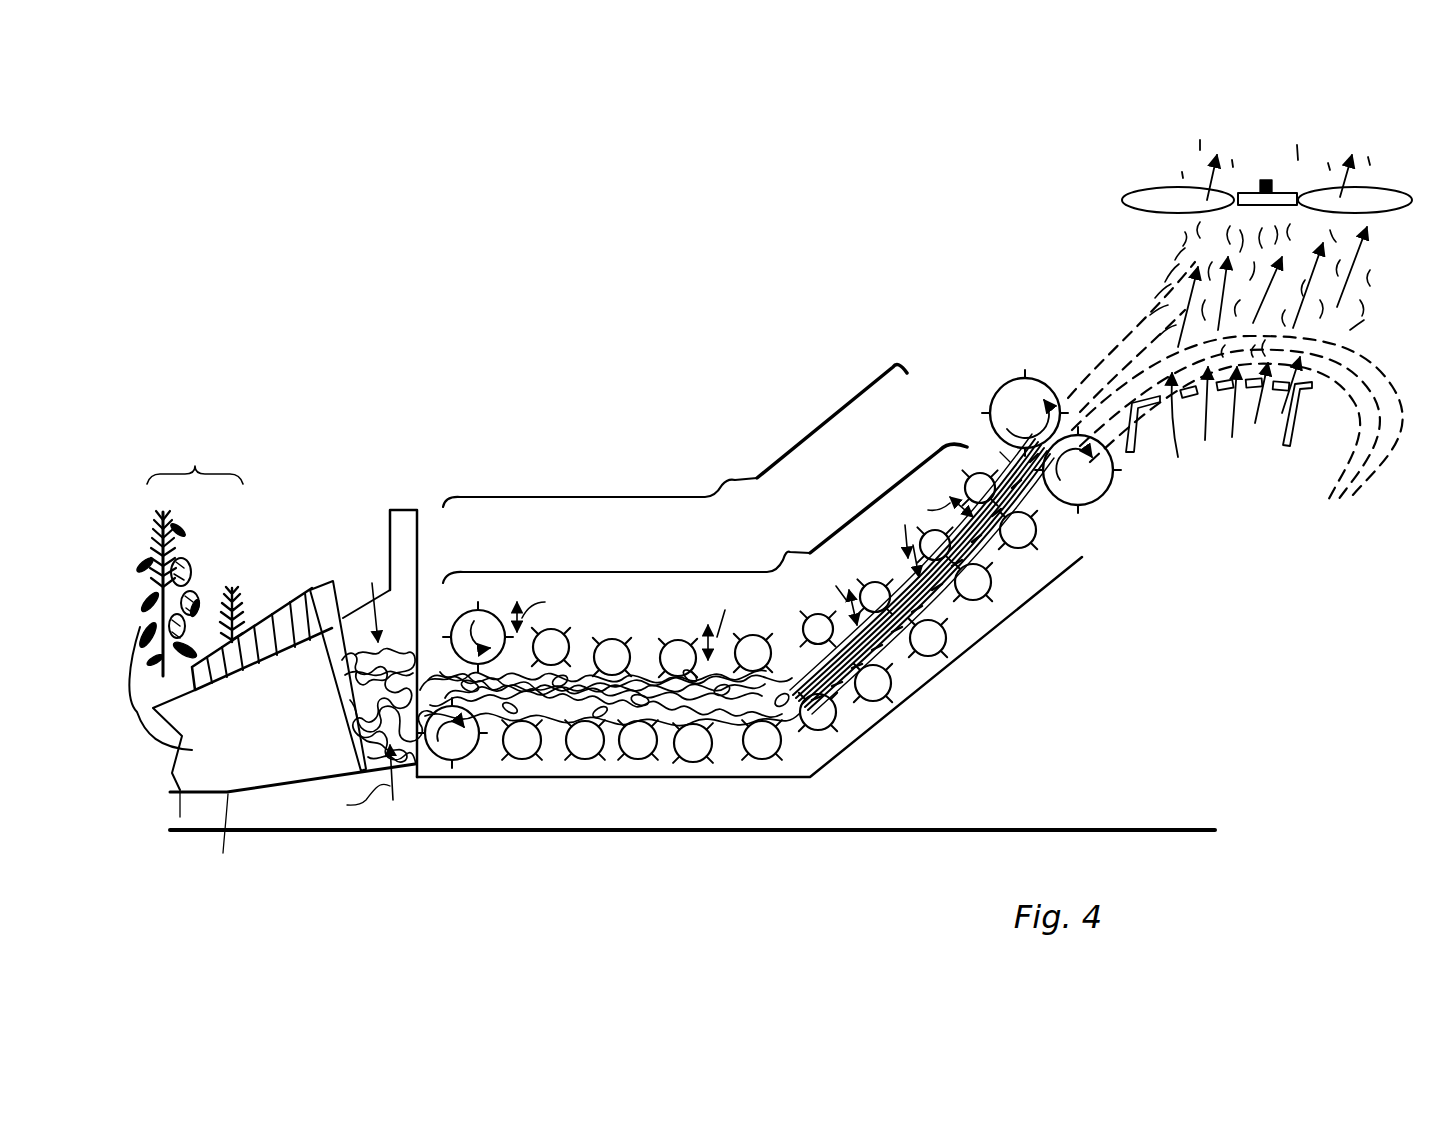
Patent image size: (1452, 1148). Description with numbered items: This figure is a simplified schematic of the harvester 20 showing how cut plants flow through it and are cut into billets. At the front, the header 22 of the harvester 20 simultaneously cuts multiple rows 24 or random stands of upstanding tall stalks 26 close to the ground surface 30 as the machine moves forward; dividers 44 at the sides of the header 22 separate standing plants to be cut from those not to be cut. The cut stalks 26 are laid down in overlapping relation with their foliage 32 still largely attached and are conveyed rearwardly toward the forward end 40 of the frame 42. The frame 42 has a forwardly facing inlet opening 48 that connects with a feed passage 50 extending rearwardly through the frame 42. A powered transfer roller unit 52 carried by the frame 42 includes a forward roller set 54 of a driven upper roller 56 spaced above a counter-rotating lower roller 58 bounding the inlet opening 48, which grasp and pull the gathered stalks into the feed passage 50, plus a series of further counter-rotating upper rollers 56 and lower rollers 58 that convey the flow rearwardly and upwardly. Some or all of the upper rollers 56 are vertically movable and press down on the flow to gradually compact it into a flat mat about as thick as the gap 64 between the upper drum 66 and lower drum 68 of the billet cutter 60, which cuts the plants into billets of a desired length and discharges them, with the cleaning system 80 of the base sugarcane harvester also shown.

The harvester 20 is at (972, 262).
The header 22 is at (330, 578).
The rows 24 is at (195, 459).
The stalks 26 is at (172, 523).
The ground surface 30 is at (1133, 828).
The foliage 32 is at (190, 562).
The forward end 40 is at (454, 804).
The frame 42 is at (993, 585).
The dividers 44 is at (216, 842).
The inlet opening 48 is at (434, 756).
The feed passage 50 is at (675, 436).
The transfer roller unit 52 is at (705, 513).
The forward roller set 54 is at (468, 606).
The upper rollers 56 is at (497, 605).
The lower rollers 58 is at (458, 762).
The billet cutter 60 is at (995, 386).
The gap 64 is at (1007, 458).
The upper drum 66 is at (1047, 378).
The lower drum 68 is at (1105, 495).
The cleaning system 80 is at (1297, 183).